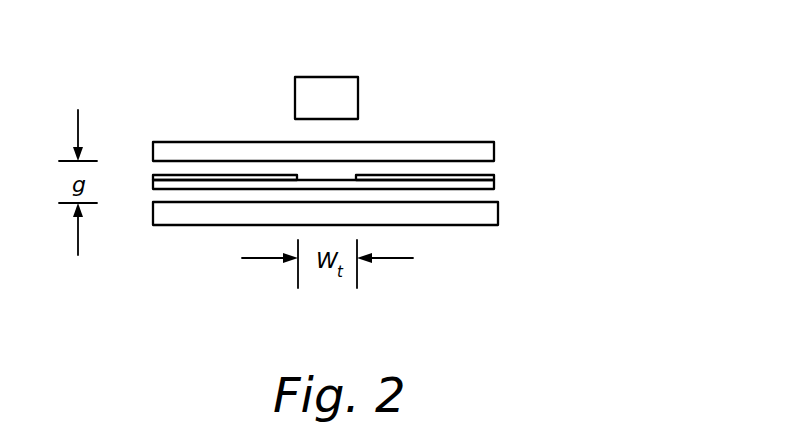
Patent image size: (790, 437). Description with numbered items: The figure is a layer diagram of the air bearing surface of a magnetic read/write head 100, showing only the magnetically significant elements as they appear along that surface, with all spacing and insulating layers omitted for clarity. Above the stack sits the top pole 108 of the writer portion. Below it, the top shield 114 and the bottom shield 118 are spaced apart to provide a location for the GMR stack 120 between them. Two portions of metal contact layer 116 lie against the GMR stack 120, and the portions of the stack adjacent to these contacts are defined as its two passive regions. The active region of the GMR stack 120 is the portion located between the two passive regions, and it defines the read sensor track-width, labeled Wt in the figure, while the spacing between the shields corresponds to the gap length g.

The magnetic read/write head 100 is at (430, 98).
The top pole 108 is at (342, 92).
The top shield 114 is at (232, 141).
The metal contact layer 116 is at (153, 178).
The bottom shield 118 is at (467, 219).
The GMR stack 120 is at (495, 185).